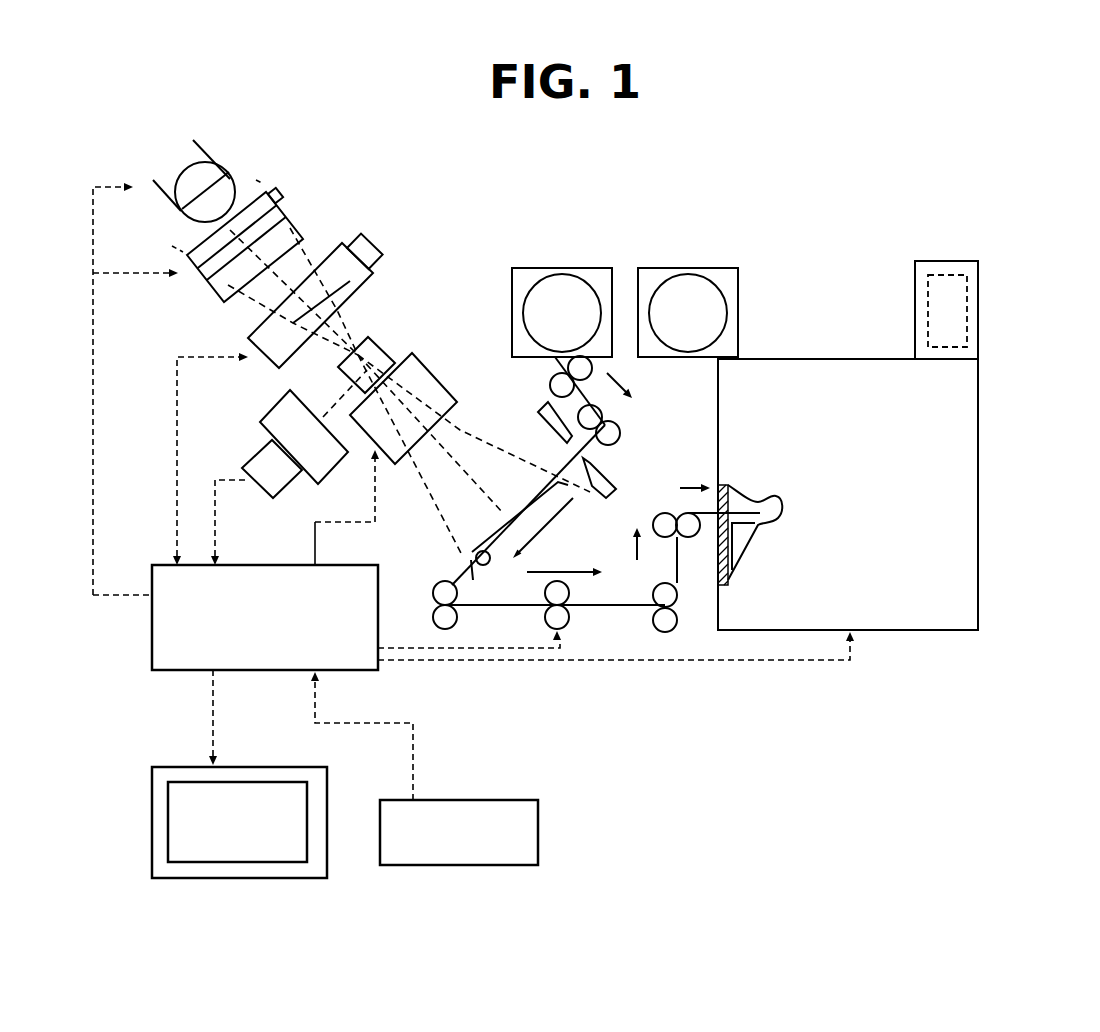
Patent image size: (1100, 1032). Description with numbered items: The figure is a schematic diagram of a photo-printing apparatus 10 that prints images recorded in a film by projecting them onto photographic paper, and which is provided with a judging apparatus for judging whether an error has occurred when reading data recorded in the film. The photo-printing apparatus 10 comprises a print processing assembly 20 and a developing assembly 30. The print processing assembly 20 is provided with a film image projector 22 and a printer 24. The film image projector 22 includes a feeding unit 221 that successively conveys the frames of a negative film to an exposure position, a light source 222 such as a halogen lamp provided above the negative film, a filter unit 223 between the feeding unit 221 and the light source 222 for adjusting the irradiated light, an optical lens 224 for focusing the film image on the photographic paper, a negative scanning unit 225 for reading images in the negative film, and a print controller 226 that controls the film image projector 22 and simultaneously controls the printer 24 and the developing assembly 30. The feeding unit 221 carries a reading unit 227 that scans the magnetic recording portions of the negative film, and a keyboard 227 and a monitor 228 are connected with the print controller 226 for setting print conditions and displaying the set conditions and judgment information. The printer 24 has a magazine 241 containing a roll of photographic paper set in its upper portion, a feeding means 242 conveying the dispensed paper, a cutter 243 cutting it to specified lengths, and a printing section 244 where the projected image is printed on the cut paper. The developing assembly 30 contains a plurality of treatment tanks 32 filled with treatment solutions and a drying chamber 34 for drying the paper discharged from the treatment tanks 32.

The photo-printing apparatus 10 is at (507, 162).
The print processing assembly 20 is at (481, 254).
The film image projector 22 is at (165, 323).
The printer 24 is at (662, 440).
The developing assembly 30 is at (966, 537).
The treatment tanks 32 is at (748, 535).
The drying chamber 34 is at (957, 320).
The feeding unit 221 is at (371, 287).
The light source 222 is at (230, 184).
The filter unit 223 is at (279, 197).
The optical lens 224 is at (408, 372).
The negative scanning unit 225 is at (290, 417).
The print controller 226 is at (152, 630).
The keyboard 227 is at (442, 867).
The monitor 228 is at (192, 853).
The magazine 241 is at (683, 298).
The feeding means 242 is at (624, 425).
The cutter 243 is at (599, 474).
The printing section 244 is at (475, 565).